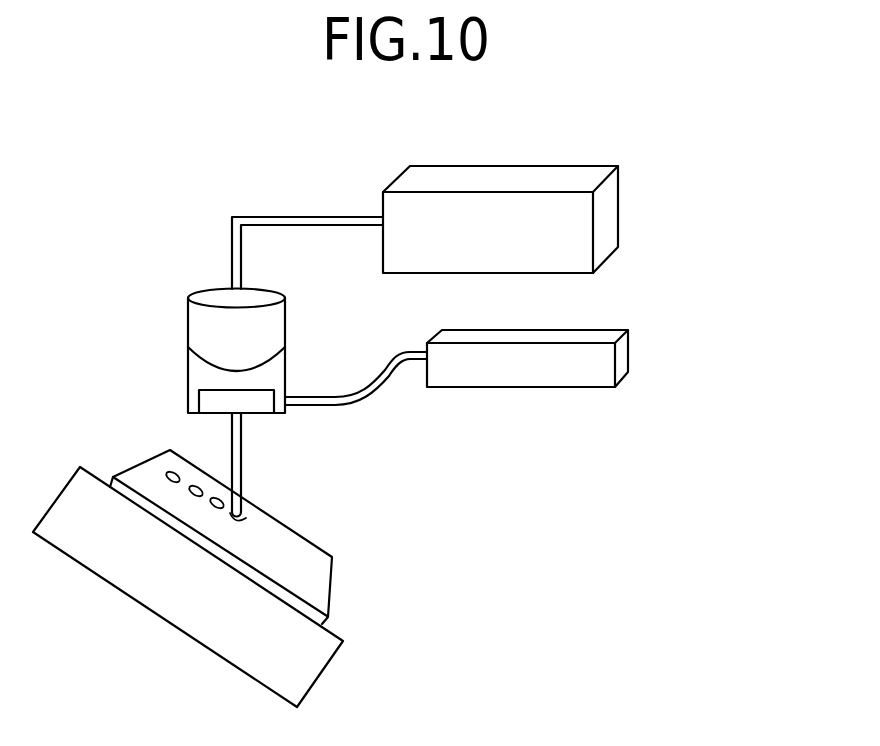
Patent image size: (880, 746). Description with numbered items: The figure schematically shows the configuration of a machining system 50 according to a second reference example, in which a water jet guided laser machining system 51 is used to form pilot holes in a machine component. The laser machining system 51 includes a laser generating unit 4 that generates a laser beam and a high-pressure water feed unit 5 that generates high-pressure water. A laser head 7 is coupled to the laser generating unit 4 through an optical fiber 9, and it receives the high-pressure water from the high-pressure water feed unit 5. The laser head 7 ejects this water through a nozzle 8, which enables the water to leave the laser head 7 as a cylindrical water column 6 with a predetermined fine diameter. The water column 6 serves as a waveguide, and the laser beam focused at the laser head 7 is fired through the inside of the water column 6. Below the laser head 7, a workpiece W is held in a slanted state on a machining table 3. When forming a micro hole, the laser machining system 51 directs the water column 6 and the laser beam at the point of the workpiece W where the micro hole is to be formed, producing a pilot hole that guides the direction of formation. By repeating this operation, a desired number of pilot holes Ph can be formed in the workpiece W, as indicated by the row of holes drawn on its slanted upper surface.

The machining system 50 is at (722, 407).
The water jet guided laser machining system 51 is at (168, 250).
The machining table 3 is at (310, 663).
The laser generating unit 4 is at (638, 217).
The high-pressure water feed unit 5 is at (525, 417).
The water column 6 is at (230, 448).
The laser head 7 is at (198, 323).
The nozzle 8 is at (213, 397).
The optical fiber 9 is at (313, 215).
The workpiece W is at (303, 547).
The pilot holes Ph is at (163, 467).